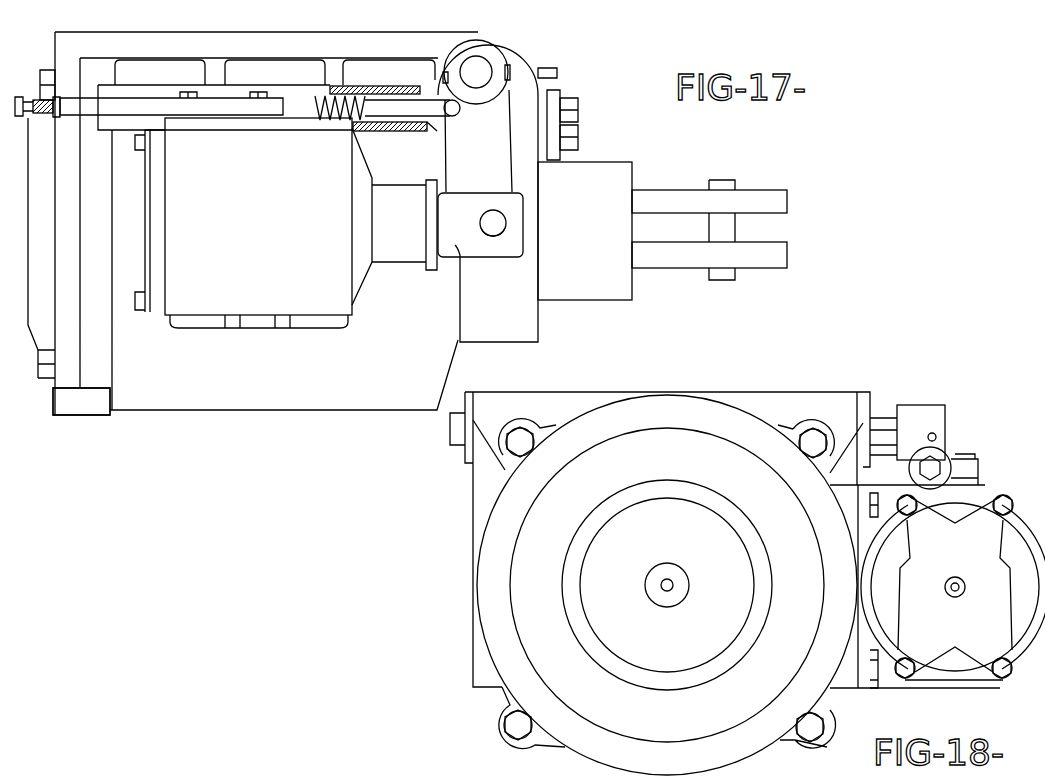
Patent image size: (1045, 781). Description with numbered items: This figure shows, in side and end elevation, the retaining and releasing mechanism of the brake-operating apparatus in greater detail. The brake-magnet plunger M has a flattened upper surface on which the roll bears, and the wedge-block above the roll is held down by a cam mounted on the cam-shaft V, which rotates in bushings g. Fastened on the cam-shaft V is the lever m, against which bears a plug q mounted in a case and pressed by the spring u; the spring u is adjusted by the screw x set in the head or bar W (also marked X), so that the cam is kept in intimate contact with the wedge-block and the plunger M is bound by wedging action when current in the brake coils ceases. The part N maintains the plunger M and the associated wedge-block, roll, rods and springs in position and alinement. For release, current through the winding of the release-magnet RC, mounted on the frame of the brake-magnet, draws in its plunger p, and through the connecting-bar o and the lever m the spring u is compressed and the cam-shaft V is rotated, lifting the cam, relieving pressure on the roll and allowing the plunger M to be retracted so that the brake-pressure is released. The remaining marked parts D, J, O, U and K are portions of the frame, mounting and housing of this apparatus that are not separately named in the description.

In FIG. 17, the frame D is at (306, 32).
In FIG. 18, the frame D is at (740, 392).
In FIG. 17, the base plate J is at (67, 415).
In FIG. 18, the base plate J is at (575, 745).
In FIG. 17, the head or bar W is at (88, 98).
In FIG. 18, the head or bar W is at (980, 468).
In FIG. 17, the screw X is at (30, 115).
In FIG. 17, the spring u is at (367, 90).
In FIG. 17, the plug q is at (428, 127).
In FIG. 17, the bushings g is at (470, 34).
In FIG. 18, the bushings g is at (465, 393).
In FIG. 17, the cam-shaft V is at (485, 66).
In FIG. 18, the cam-shaft V is at (458, 430).
In FIG. 17, the connecting-bar o is at (498, 272).
In FIG. 17, the lever m is at (510, 107).
In FIG. 18, the lever m is at (922, 405).
In FIG. 17, the part (alignment guide) N is at (580, 120).
In FIG. 17, the plunger M is at (632, 162).
In FIG. 17, the rails O is at (829, 200).
In FIG. 17, the clamp U is at (736, 180).
In FIG. 17, the release-magnet RC is at (345, 298).
In FIG. 18, the release-magnet RC is at (978, 680).
In FIG. 17, the plunger (of release-magnet) p is at (395, 262).
In FIG. 18, the housing cover K is at (737, 565).
In FIG. 18, the screw x is at (940, 466).